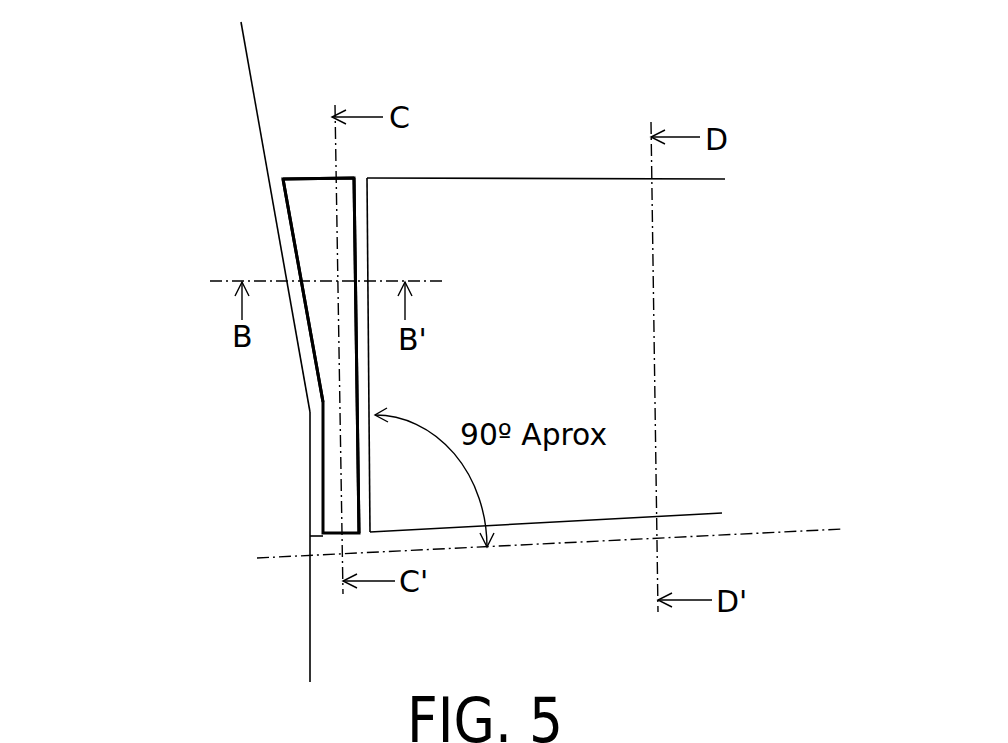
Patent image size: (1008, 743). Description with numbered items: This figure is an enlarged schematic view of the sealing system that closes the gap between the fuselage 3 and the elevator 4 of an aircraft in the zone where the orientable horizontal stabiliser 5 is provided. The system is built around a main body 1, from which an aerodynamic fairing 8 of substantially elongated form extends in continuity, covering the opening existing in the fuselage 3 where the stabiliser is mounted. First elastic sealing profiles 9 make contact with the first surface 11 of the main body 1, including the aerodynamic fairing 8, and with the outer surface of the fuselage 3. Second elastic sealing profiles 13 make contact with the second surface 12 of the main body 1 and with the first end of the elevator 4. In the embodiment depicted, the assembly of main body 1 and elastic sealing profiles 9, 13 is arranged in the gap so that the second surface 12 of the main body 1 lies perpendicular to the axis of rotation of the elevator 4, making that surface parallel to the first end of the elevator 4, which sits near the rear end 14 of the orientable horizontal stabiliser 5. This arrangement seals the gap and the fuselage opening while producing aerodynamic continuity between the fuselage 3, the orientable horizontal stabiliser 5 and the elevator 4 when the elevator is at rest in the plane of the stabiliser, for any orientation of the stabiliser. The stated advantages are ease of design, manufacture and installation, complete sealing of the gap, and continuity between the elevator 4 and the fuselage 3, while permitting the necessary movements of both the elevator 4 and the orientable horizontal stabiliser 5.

The main body 1 is at (322, 338).
The fuselage 3 is at (183, 97).
The elevator 4 is at (795, 363).
The orientable horizontal stabiliser 5 is at (630, 657).
The aerodynamic fairing 8 is at (335, 575).
The first elastic sealing profiles 9 is at (277, 190).
The first surface of the main body 11 is at (290, 227).
The second surface of the main body 12 is at (355, 220).
The second elastic sealing profiles 13 is at (360, 260).
The rear end of the orientable horizontal stabiliser 14 is at (540, 525).